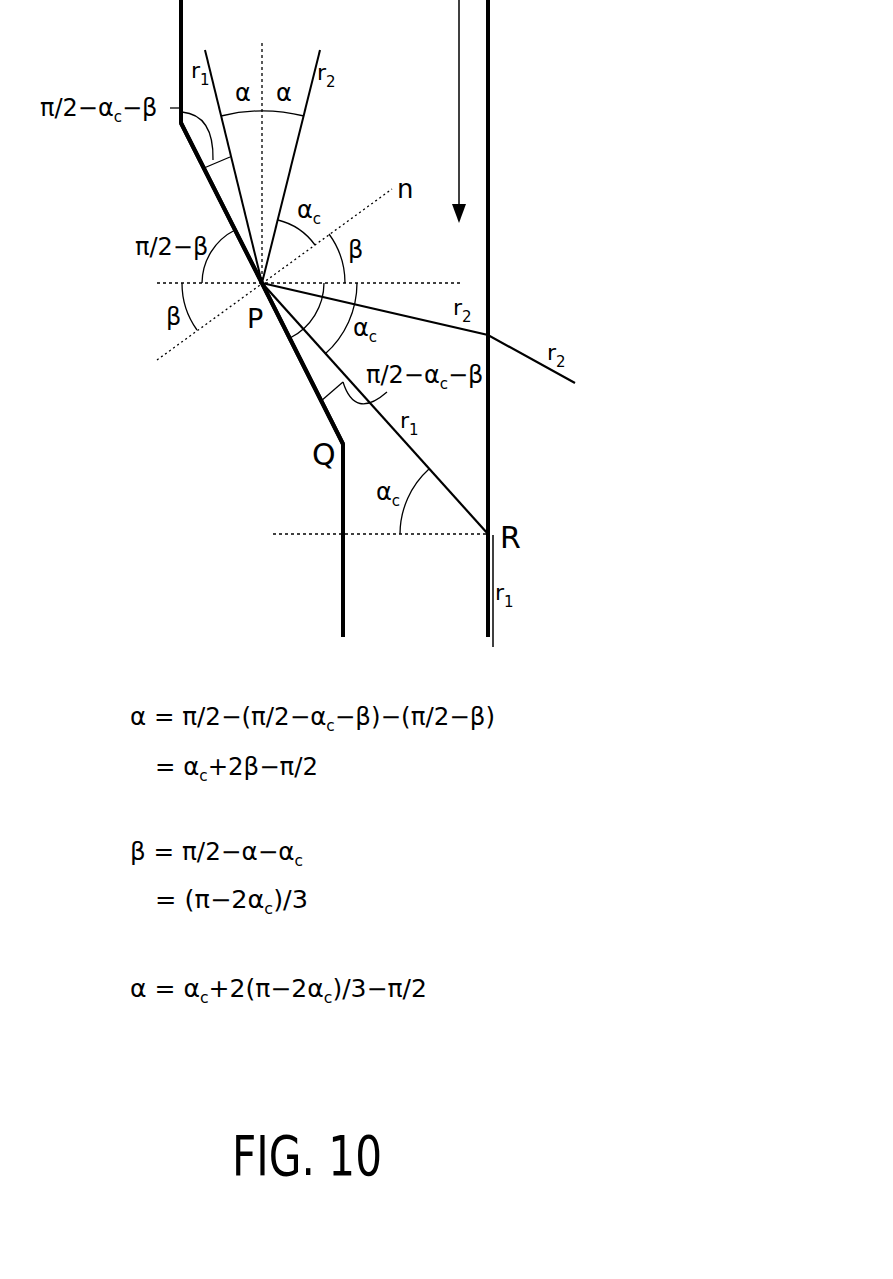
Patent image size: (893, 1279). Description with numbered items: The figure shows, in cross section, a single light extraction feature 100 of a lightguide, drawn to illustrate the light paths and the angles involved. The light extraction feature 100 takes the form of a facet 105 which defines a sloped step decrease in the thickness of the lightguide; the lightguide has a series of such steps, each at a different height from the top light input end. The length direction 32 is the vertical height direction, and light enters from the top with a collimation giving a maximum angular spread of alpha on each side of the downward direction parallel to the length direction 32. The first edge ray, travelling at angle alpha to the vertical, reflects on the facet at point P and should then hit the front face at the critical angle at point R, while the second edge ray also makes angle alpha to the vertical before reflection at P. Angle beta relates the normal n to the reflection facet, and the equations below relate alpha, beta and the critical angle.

The length direction 32 is at (459, 70).
The light extraction feature 100 is at (289, 378).
The facet 105 is at (217, 196).